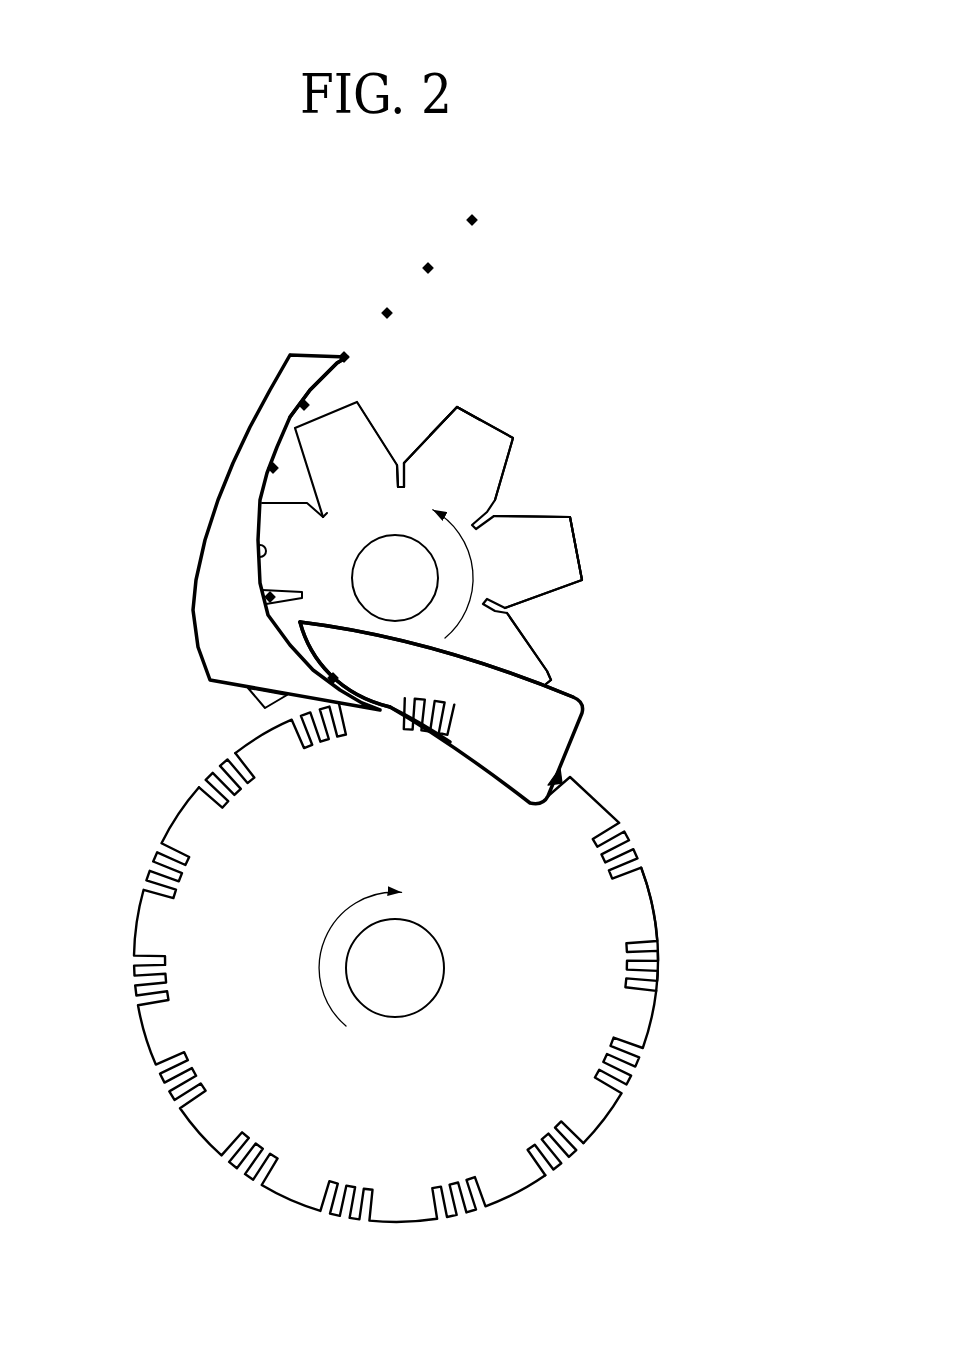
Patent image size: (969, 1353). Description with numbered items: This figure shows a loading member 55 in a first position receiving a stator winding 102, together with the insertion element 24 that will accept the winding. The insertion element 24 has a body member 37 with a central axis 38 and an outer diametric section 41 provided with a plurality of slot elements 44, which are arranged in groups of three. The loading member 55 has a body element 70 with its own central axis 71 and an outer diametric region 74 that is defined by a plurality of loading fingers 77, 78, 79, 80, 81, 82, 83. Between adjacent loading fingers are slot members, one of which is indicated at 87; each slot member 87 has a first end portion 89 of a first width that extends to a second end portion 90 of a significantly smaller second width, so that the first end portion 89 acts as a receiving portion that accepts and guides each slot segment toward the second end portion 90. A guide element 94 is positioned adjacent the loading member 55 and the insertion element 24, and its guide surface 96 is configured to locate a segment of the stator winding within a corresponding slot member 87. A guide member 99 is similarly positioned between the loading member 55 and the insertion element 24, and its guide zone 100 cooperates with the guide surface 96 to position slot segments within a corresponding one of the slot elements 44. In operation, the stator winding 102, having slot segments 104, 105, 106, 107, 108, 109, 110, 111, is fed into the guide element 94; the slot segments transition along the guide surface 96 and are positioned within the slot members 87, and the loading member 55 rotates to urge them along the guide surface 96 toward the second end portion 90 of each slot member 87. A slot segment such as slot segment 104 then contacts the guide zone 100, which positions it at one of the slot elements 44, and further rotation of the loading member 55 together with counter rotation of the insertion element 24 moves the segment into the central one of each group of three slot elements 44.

The insertion element 24 is at (268, 1000).
The body member 37 is at (655, 905).
The central axis 38 is at (393, 968).
The outer diametric section 41 is at (597, 1132).
The slot elements 44 is at (262, 815).
The loading member 55 is at (609, 527).
The body element 70 is at (532, 540).
The central axis 71 is at (395, 578).
The outer diametric region 74 is at (582, 570).
The loading finger 77 is at (487, 448).
The loading finger 78 is at (537, 567).
The loading finger 79 is at (527, 660).
The slot member 87 is at (404, 422).
The first end portion 89 is at (447, 413).
The second end portion 90 is at (400, 492).
The guide element 94 is at (202, 477).
The loading finger 83 is at (297, 408).
The loading finger 82 is at (262, 522).
The guide surface 96 is at (262, 560).
The slot segment 105 is at (270, 598).
The slot segment 106 is at (273, 468).
The slot segment 107 is at (303, 405).
The slot segment 108 is at (344, 357).
The loading finger 81 is at (250, 696).
The guide member 99 is at (606, 748).
The guide zone 100 is at (388, 712).
The slot segment 104 is at (338, 676).
The loading finger 80 is at (378, 712).
The stator winding 102 is at (302, 237).
The slot segment 109 is at (387, 313).
The slot segment 110 is at (428, 268).
The slot segment 111 is at (472, 220).